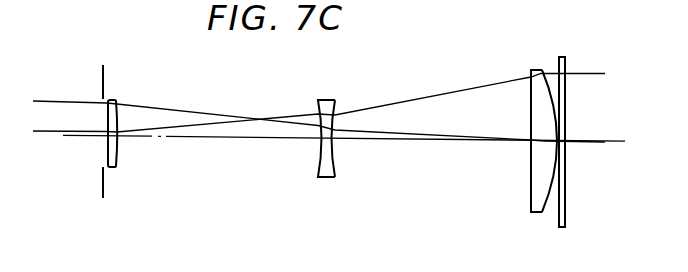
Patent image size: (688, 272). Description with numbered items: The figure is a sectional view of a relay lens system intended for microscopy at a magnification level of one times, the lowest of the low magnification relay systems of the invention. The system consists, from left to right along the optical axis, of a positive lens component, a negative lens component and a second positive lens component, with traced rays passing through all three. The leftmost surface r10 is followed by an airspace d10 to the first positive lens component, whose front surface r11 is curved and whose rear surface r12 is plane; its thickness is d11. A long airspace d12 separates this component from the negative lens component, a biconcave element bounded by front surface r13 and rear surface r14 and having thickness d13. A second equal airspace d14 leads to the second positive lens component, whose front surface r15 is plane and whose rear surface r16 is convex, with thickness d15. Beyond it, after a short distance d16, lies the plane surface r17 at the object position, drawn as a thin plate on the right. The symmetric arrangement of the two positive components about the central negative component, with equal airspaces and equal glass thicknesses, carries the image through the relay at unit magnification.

The airspace d10 is at (105, 132).
The lens thickness d11 is at (115, 133).
The airspace d12 is at (244, 137).
The lens thickness d13 is at (328, 140).
The airspace d14 is at (419, 141).
The lens thickness d15 is at (543, 140).
The airspace d16 is at (557, 138).
The surface radius of curvature r10 is at (103, 183).
The surface radius of curvature r11 is at (107, 156).
The surface radius of curvature r12 is at (118, 157).
The surface radius of curvature r13 is at (318, 162).
The surface radius of curvature r14 is at (337, 166).
The surface radius of curvature r15 is at (531, 180).
The surface radius of curvature r16 is at (545, 205).
The surface radius of curvature r17 is at (566, 193).